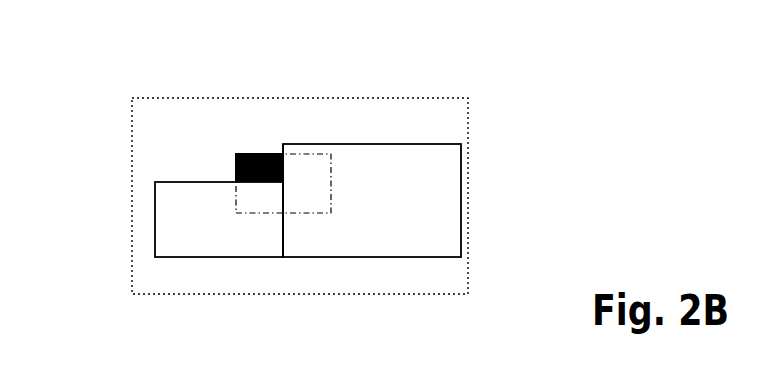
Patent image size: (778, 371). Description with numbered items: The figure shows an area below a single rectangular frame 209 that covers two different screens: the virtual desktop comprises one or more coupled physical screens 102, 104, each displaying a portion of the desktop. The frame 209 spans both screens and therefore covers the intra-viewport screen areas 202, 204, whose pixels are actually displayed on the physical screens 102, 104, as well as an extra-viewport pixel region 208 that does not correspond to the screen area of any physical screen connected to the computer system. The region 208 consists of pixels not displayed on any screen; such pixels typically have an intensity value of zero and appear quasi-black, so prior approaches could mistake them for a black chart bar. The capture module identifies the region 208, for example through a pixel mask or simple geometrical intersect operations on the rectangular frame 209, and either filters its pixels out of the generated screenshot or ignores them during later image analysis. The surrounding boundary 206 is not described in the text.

The physical screen 102 is at (216, 243).
The physical screen 104 is at (377, 243).
The intra-viewport screen area 202 is at (255, 203).
The intra-viewport screen area 204 is at (298, 200).
The field of view 206 is at (177, 120).
The extra-viewport pixel region 208 is at (271, 176).
The frame 209 is at (320, 148).